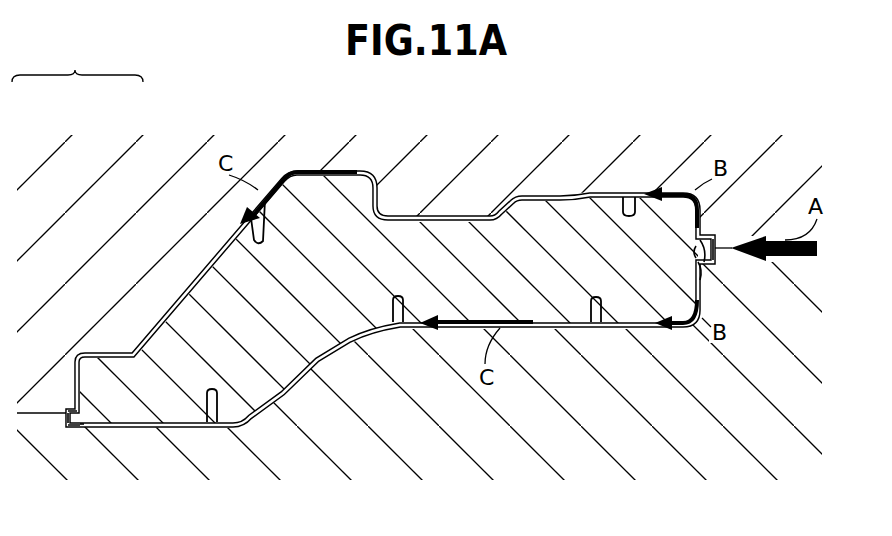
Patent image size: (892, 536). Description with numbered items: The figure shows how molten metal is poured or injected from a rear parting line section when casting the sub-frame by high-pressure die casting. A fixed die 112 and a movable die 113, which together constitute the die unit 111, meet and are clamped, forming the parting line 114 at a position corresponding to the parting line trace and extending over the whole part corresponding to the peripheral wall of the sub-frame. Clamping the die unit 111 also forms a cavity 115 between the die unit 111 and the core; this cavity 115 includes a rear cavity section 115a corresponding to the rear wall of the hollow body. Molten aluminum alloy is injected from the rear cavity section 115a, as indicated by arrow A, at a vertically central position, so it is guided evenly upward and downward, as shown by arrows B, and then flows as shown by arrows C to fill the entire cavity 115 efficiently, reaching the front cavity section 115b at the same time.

The die unit 111 is at (77, 59).
The fixed die 112 is at (32, 432).
The movable die 113 is at (127, 250).
The parting line 114 is at (80, 410).
The cavity 115 is at (442, 208).
The rear cavity section 115a is at (693, 254).
The front cavity section 115b is at (77, 426).